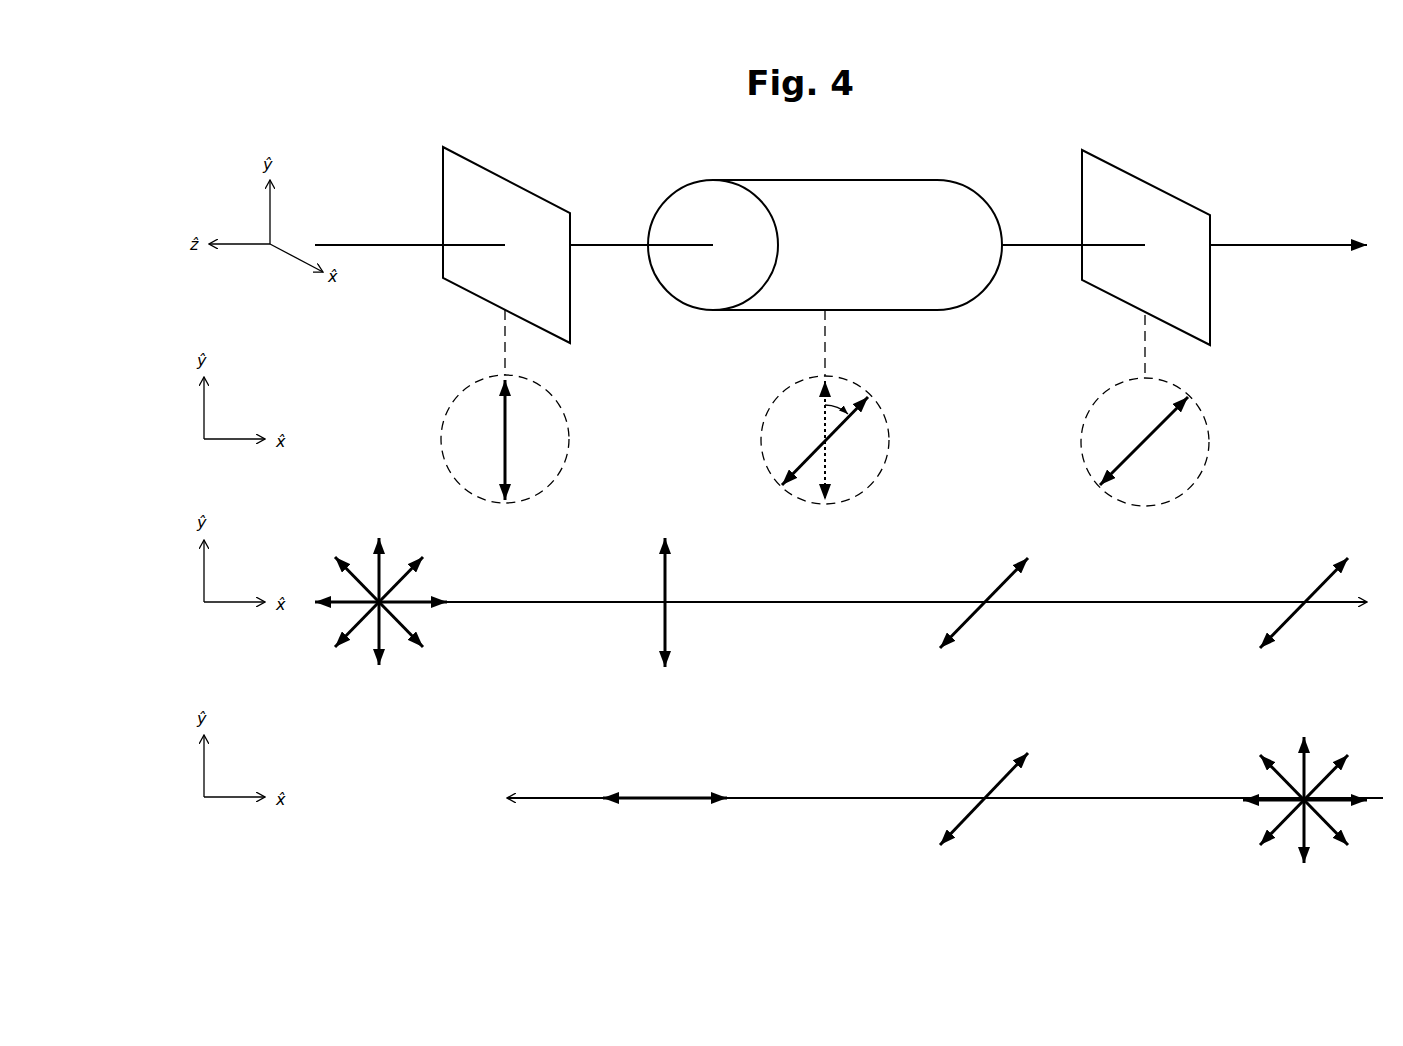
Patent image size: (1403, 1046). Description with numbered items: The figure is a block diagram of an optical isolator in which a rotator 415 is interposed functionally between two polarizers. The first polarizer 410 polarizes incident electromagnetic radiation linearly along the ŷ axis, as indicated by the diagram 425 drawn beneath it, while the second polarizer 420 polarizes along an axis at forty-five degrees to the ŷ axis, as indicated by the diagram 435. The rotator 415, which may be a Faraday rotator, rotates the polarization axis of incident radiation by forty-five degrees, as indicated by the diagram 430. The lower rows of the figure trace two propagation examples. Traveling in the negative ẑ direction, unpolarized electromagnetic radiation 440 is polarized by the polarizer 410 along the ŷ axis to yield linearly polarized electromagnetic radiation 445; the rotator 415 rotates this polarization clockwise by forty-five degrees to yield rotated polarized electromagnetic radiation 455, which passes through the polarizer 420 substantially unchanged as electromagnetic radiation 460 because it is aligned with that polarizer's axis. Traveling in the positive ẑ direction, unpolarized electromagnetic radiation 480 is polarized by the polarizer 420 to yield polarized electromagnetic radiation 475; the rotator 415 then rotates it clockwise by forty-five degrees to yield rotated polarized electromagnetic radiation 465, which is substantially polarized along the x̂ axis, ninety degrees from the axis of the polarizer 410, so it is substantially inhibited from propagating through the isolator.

The polarizer 410 is at (540, 195).
The rotator 415 is at (860, 178).
The polarizer 420 is at (1178, 197).
The diagram 425 is at (570, 438).
The diagram 430 is at (888, 440).
The diagram 435 is at (1208, 440).
The unpolarized electromagnetic radiation 440 is at (378, 665).
The linearly polarized electromagnetic radiation 445 is at (663, 603).
The rotated polarized electromagnetic radiation 455 is at (988, 606).
The electromagnetic radiation 460 is at (1308, 606).
The rotated polarized electromagnetic radiation 465 is at (663, 800).
The polarized electromagnetic radiation 475 is at (988, 803).
The unpolarized electromagnetic radiation 480 is at (1262, 843).